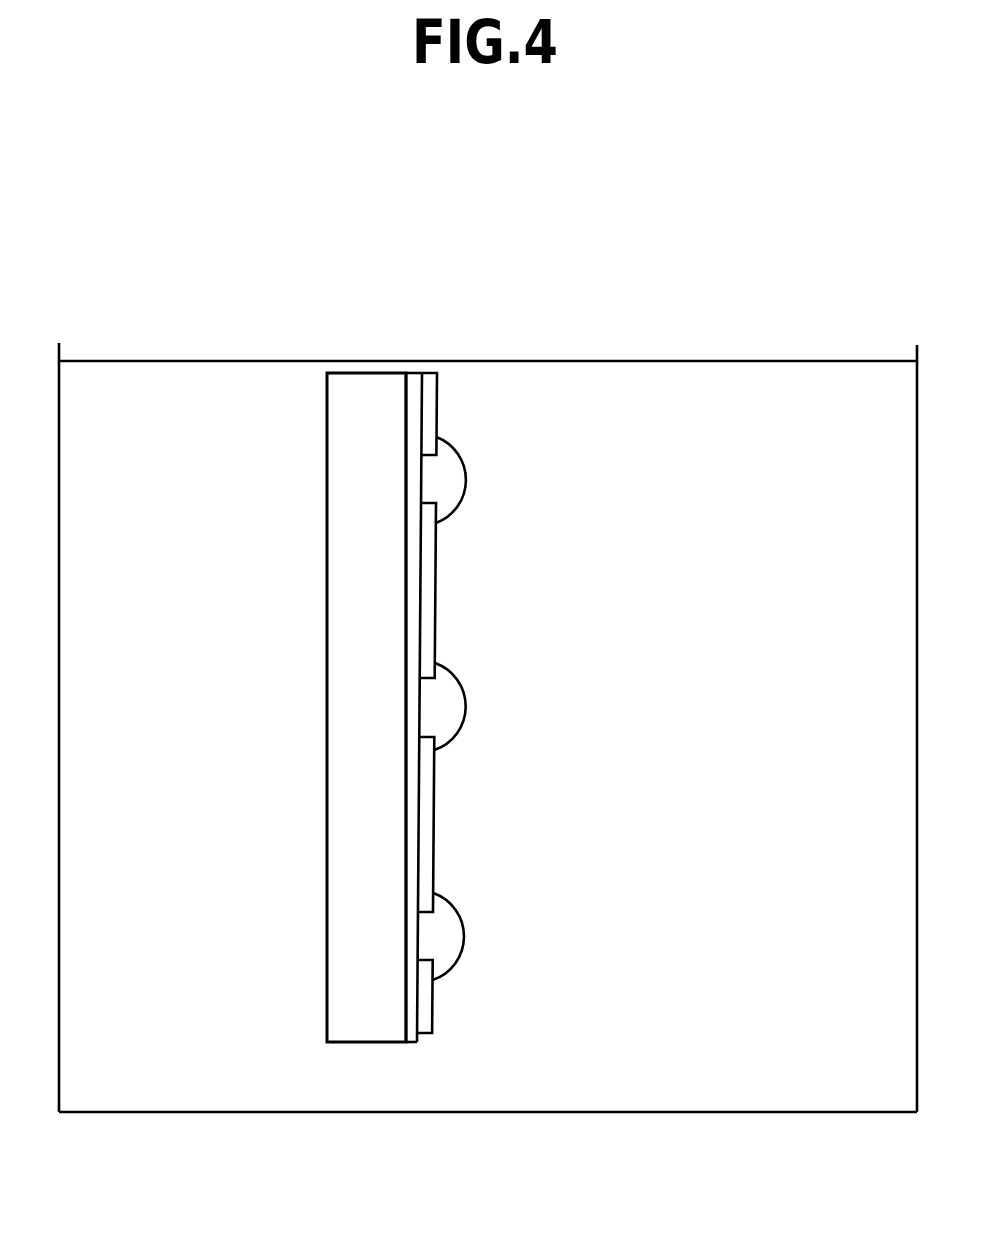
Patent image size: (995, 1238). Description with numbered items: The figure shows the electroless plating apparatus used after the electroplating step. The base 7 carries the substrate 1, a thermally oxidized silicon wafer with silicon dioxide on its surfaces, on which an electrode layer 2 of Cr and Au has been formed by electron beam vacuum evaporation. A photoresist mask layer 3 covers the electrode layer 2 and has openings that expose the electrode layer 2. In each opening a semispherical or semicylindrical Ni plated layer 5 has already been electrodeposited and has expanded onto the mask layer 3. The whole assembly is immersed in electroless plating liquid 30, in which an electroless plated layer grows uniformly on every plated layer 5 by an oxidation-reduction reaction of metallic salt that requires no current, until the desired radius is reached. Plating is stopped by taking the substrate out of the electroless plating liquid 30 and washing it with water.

The substrate 1 is at (355, 1033).
The electrode layer 2 is at (410, 1033).
The mask layer 3 is at (425, 1002).
The plated layer 5 is at (450, 912).
The base 7 is at (368, 387).
The electroless plating liquid 30 is at (722, 387).